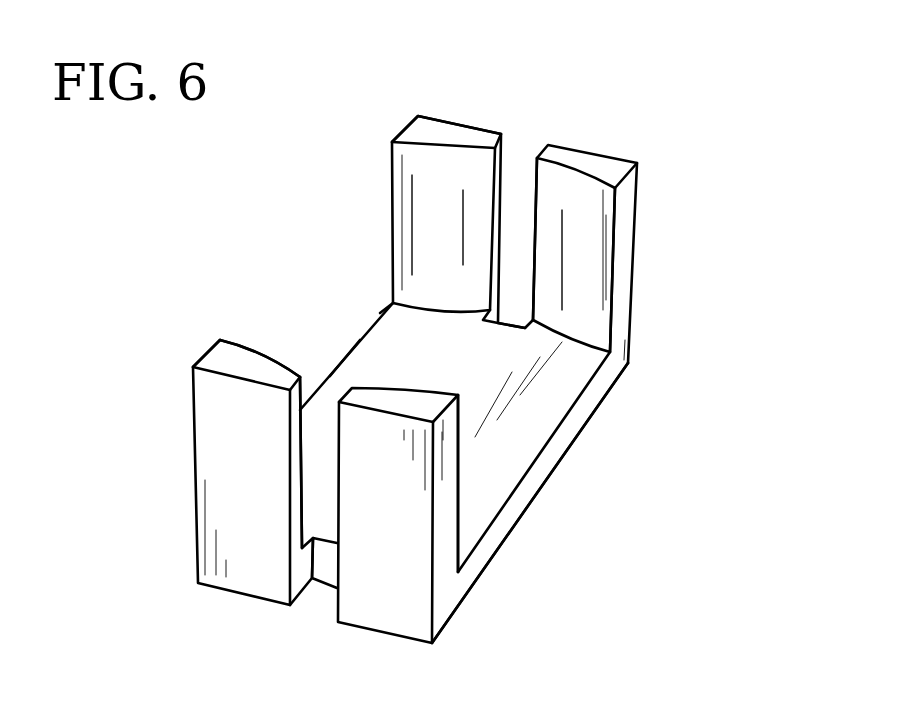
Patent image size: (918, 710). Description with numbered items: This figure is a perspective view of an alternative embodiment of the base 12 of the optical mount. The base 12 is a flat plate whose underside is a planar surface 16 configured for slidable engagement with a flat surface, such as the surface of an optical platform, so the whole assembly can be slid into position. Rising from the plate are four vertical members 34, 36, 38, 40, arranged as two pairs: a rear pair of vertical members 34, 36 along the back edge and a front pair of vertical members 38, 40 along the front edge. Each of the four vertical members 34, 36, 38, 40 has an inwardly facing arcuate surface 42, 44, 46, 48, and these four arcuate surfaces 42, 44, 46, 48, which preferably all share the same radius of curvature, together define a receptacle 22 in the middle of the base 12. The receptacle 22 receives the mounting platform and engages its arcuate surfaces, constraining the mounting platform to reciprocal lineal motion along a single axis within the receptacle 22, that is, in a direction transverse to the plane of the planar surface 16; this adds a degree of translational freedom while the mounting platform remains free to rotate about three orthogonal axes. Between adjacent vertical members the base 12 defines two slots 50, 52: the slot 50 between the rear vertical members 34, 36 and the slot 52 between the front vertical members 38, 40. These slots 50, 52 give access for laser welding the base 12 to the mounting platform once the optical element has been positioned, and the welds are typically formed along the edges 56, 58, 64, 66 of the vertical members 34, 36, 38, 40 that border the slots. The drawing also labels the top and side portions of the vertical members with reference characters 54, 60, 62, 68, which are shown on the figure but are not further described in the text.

The base 12 is at (610, 375).
The planar surface 16 is at (548, 480).
The receptacle 22 is at (523, 422).
The vertical member 34 is at (430, 130).
The vertical member 36 is at (603, 170).
The vertical member 38 is at (443, 552).
The vertical member 40 is at (217, 433).
The arcuate surface 42 is at (413, 185).
The arcuate surface 44 is at (583, 270).
The arcuate surface 46 is at (418, 364).
The arcuate surface 48 is at (252, 345).
The slot 50 is at (515, 153).
The slot 52 is at (315, 493).
The top surface of rear left post 54 is at (390, 147).
The edge 56 is at (477, 235).
The edge 58 is at (525, 162).
The outer side face of rear right post 60 is at (615, 222).
The outer side face of front right post 62 is at (460, 482).
The edge 64 is at (338, 372).
The edge 66 is at (302, 445).
The top surface of front left post 68 is at (220, 338).